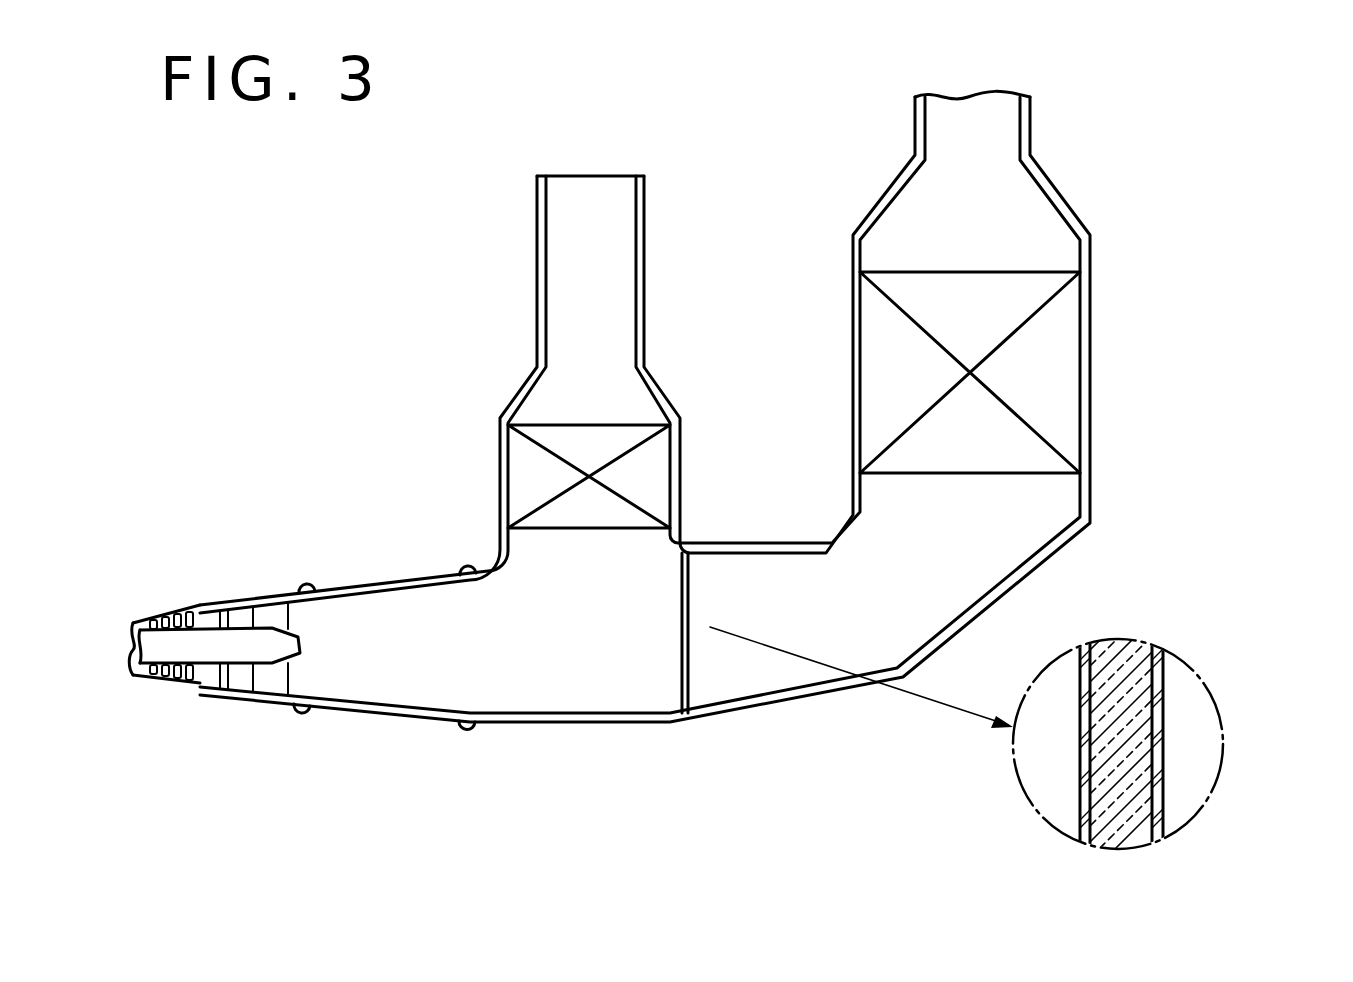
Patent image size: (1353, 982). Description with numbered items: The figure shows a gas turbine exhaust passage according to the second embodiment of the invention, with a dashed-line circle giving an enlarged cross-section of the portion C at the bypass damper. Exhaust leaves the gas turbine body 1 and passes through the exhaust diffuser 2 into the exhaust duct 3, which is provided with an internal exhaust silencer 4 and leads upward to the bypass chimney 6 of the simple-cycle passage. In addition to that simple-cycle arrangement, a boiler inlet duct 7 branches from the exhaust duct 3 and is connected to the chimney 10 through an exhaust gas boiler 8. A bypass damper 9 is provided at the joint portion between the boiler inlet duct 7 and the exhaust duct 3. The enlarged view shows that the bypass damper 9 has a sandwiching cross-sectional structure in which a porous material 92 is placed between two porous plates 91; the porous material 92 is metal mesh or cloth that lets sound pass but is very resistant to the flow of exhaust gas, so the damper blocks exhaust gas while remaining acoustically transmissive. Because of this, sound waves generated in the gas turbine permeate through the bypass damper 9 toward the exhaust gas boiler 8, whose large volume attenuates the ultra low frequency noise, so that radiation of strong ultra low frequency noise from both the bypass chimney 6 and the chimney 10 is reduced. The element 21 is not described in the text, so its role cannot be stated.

The gas turbine body 1 is at (200, 562).
The exhaust diffuser 2 is at (300, 562).
The exhaust duct 3 is at (300, 562).
The exhaust silencer 4 is at (586, 510).
The bypass chimney 6 is at (457, 176).
The boiler inlet duct 7 is at (845, 508).
The exhaust gas boiler 8 is at (823, 500).
The bypass damper 9 is at (690, 668).
The chimney 10 is at (893, 157).
The engine exhaust nozzle struts 21 is at (268, 686).
The porous plates 91 is at (1080, 700).
The porous material 92 is at (1116, 650).